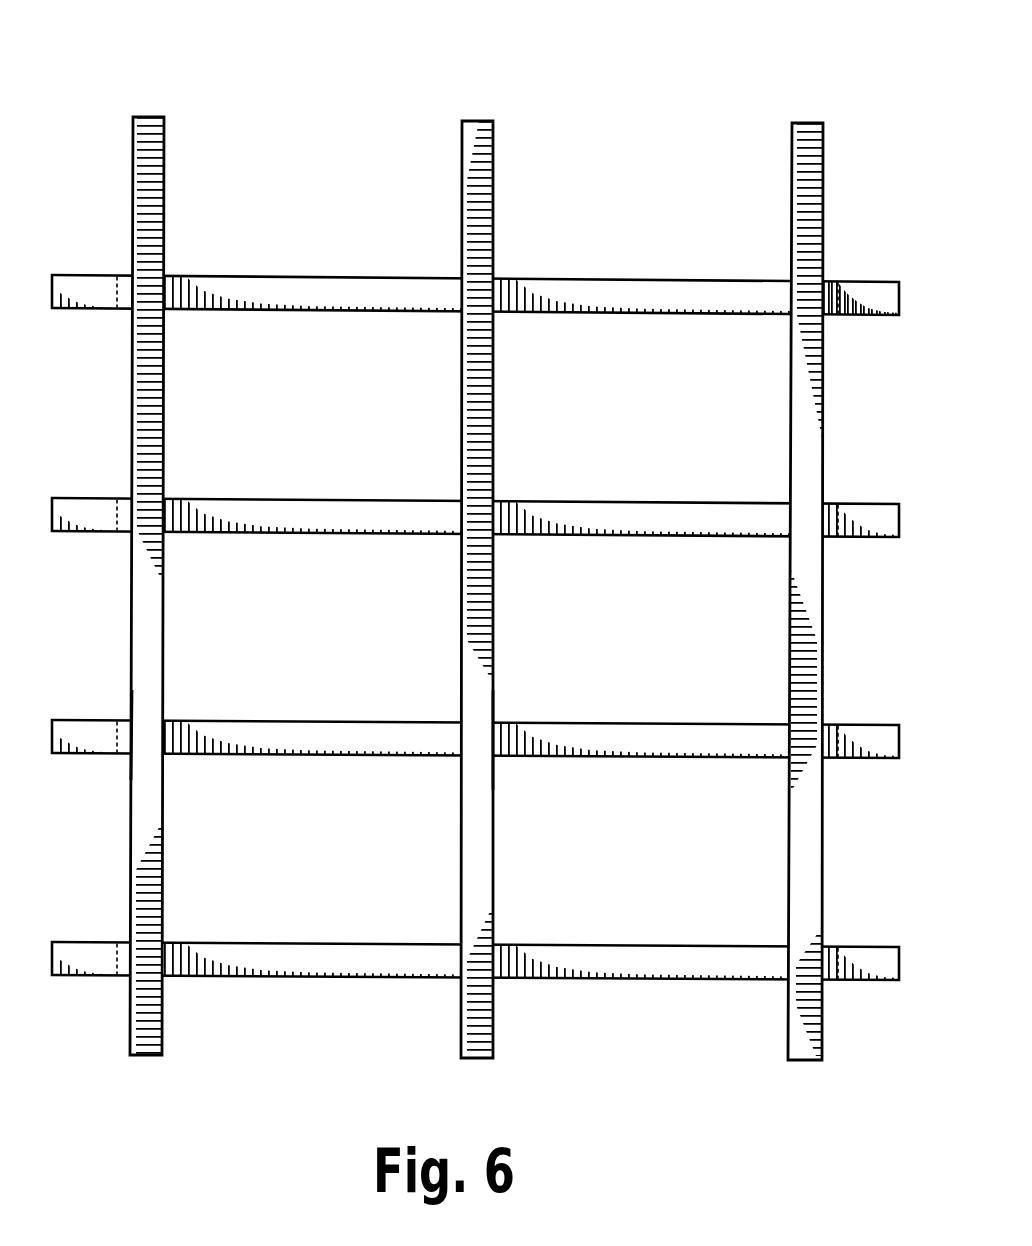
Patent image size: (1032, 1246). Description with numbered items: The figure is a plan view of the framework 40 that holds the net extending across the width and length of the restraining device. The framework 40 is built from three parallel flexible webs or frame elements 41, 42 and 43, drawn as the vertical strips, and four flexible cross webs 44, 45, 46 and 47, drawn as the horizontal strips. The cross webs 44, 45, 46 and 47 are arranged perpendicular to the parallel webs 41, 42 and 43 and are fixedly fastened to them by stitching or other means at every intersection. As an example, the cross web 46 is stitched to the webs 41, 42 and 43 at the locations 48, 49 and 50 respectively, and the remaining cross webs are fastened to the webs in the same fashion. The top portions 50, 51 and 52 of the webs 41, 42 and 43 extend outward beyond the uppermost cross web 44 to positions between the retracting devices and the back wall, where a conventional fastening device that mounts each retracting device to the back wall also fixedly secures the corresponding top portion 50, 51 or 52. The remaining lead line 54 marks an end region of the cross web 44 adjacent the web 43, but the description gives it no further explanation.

The framework 40 is at (668, 72).
The flexible web 41 is at (152, 400).
The flexible web 42 is at (472, 400).
The flexible web 43 is at (805, 405).
The flexible cross web 44 is at (296, 290).
The flexible cross web 45 is at (293, 518).
The flexible cross web 46 is at (666, 735).
The flexible cross web 47 is at (667, 957).
The stitching location 48 is at (148, 730).
The stitching location 49 is at (472, 737).
The top portion of web 50 is at (477, 544).
The top portion of web 51 is at (478, 545).
The top portion of web 52 is at (841, 551).
The end portion of horizontal slat 54 is at (842, 290).